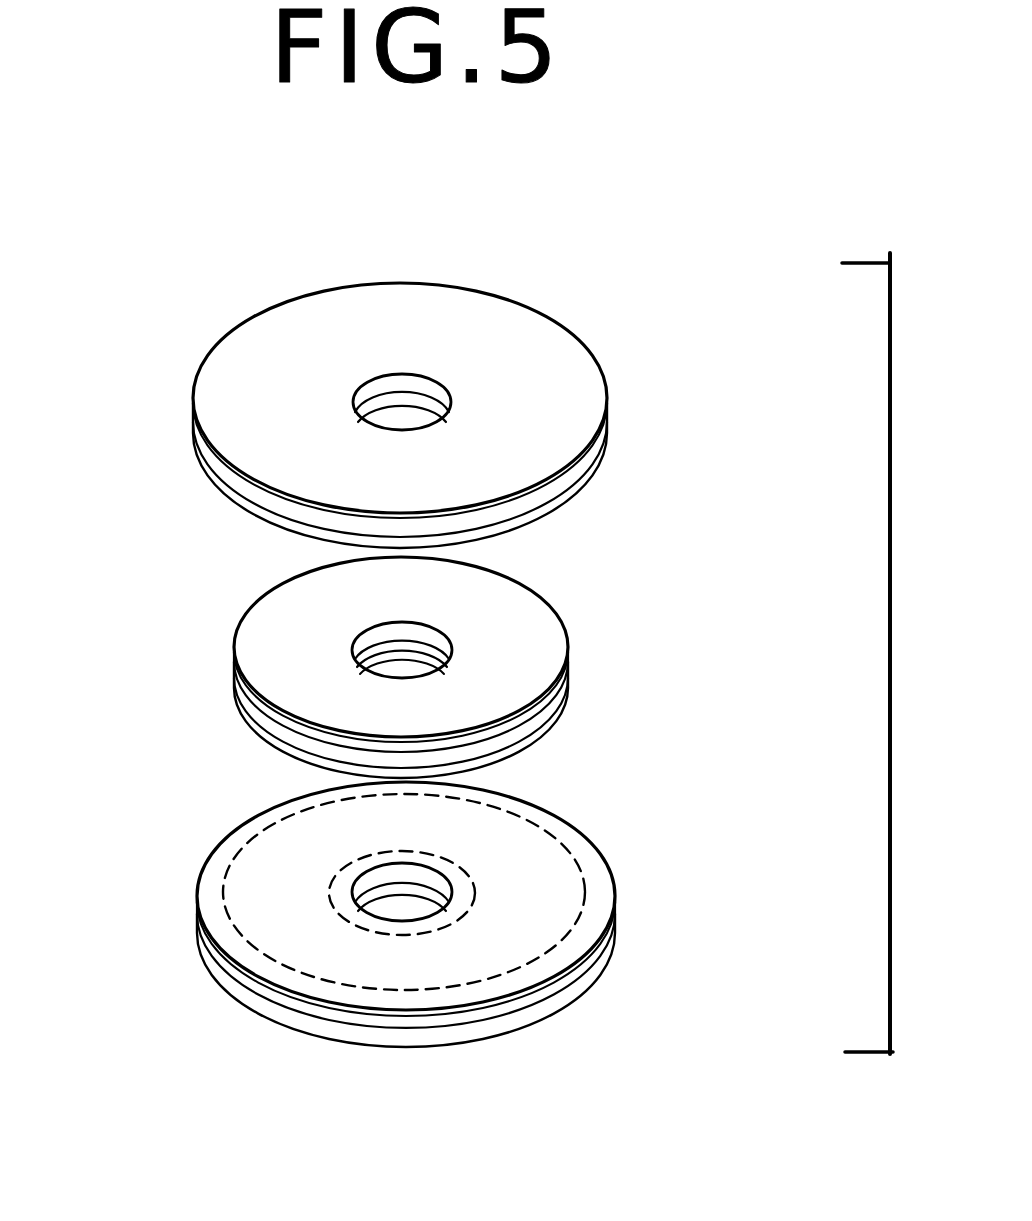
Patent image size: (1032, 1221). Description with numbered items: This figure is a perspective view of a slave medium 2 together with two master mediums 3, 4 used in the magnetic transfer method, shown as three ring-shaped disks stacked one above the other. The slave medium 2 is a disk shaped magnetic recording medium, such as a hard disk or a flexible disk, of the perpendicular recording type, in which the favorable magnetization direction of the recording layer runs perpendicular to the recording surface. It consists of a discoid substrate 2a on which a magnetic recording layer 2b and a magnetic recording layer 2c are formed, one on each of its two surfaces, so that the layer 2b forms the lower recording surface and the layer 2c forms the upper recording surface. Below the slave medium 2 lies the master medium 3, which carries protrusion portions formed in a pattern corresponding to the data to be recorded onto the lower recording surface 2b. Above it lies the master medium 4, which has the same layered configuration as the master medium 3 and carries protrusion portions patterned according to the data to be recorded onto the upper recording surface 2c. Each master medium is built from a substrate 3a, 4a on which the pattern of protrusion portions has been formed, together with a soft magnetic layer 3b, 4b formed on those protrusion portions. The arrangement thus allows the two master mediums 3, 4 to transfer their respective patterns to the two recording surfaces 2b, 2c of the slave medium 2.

The slave medium 2 is at (370, 667).
The discoid substrate 2a is at (238, 698).
The magnetic recording layer 2b is at (245, 718).
The magnetic recording layer 2c is at (240, 675).
The master medium 3 is at (392, 914).
The substrate 3a is at (200, 955).
The soft magnetic layer 3b is at (198, 913).
The master medium 4 is at (387, 415).
The substrate 4a is at (203, 427).
The soft magnetic layer 4b is at (207, 468).